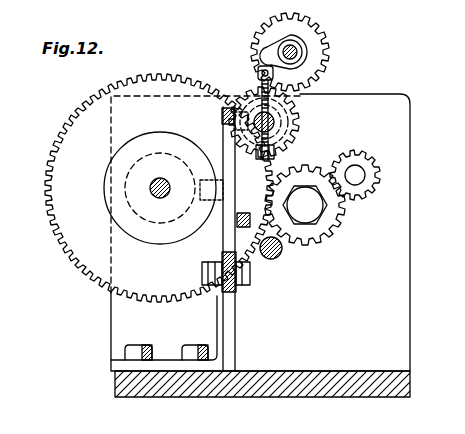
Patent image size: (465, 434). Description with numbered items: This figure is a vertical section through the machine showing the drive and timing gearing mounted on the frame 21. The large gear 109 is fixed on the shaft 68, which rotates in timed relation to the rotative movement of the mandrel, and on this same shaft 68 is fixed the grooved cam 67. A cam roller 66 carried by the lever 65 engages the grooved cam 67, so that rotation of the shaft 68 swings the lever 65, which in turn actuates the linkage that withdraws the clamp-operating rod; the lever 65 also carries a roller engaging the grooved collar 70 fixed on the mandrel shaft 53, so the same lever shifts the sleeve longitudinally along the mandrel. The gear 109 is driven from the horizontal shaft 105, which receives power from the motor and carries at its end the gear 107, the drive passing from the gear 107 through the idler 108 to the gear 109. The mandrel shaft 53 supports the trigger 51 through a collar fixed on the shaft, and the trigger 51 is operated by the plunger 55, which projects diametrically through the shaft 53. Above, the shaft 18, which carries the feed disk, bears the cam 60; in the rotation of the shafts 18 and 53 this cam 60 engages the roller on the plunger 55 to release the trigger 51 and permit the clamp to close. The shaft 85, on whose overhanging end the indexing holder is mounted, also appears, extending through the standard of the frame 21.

The shaft 18 is at (302, 60).
The frame 21 is at (206, 385).
The trigger 51 is at (275, 151).
The shaft 53 is at (298, 128).
The plunger 55 is at (280, 100).
The cam 60 is at (262, 52).
The lever 65 is at (222, 124).
The cam roller 66 is at (206, 262).
The grooved cam 67 is at (141, 238).
The shaft 68 is at (160, 187).
The grooved collar 70 is at (275, 121).
The shaft 85 is at (271, 260).
The horizontal shaft 105 is at (365, 170).
The gear 107 is at (372, 178).
The idler 108 is at (318, 243).
The gear 109 is at (93, 258).